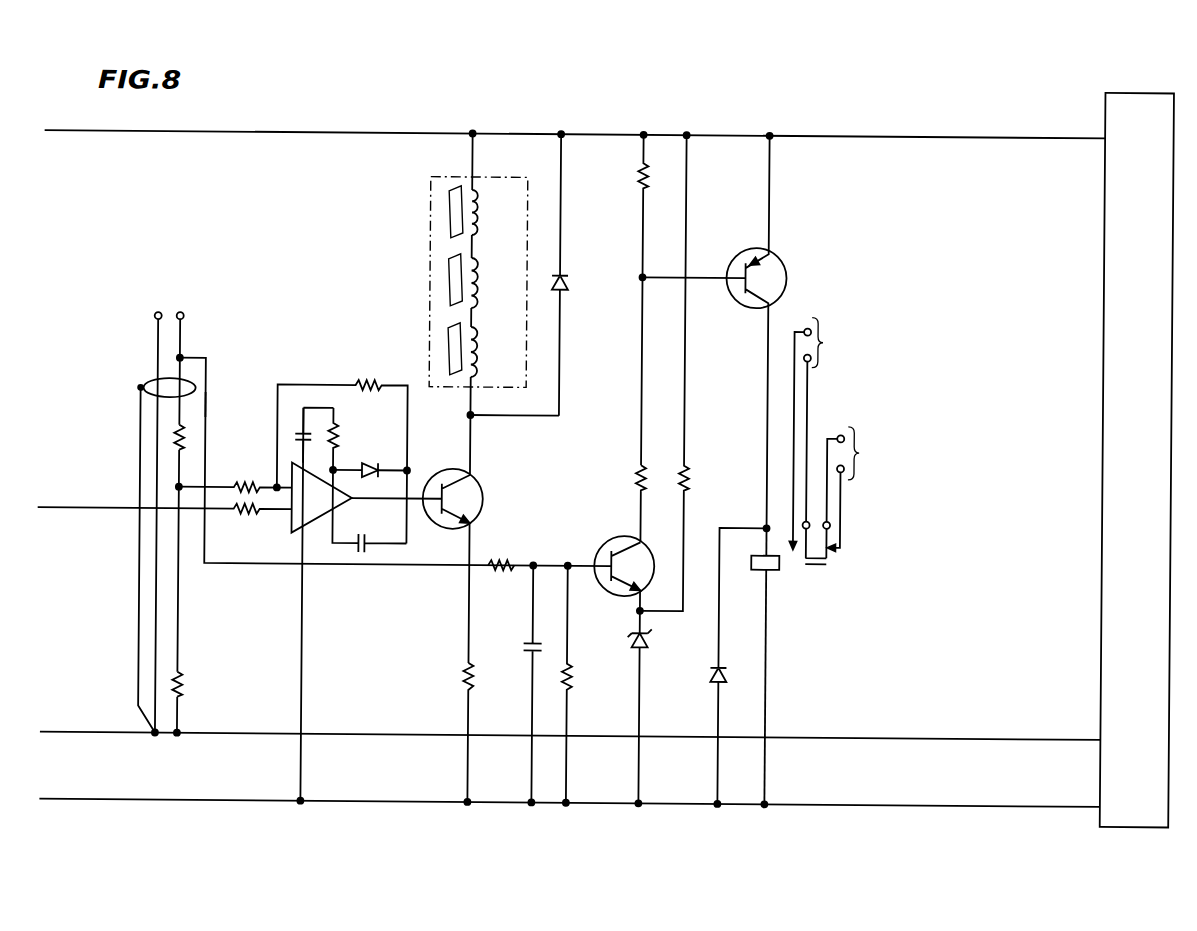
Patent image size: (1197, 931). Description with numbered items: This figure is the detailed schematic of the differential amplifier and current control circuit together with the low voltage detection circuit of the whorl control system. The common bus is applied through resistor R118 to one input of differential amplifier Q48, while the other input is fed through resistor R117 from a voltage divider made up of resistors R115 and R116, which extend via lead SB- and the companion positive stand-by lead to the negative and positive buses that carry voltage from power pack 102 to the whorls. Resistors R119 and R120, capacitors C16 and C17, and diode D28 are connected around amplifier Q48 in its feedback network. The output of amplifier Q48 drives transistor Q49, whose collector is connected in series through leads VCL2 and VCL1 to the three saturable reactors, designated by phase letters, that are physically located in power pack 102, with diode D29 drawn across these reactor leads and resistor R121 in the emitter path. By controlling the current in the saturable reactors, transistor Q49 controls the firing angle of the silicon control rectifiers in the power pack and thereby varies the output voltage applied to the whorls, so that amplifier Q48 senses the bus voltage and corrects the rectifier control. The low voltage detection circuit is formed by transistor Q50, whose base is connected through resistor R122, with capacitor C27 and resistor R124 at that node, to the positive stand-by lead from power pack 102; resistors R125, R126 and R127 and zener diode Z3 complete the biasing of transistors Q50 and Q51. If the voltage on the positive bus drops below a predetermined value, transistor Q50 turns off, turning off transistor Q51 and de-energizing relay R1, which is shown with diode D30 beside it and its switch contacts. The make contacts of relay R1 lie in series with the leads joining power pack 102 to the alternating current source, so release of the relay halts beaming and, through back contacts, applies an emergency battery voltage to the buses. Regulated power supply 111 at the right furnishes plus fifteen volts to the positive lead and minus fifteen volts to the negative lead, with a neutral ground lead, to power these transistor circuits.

The regulated power supply 111 is at (1102, 210).
The power pack 102 is at (172, 291).
The lead SB- is at (140, 412).
The resistor R115 is at (203, 684).
The resistor R116 is at (187, 446).
The resistor R117 is at (235, 477).
The resistor R118 is at (165, 508).
The resistor R119 is at (341, 451).
The resistor R120 is at (338, 440).
The resistor R121 is at (493, 734).
The resistor R122 is at (509, 555).
The resistor R124 is at (593, 686).
The resistor R125 is at (621, 298).
The resistor R126 is at (617, 503).
The resistor R127 is at (692, 373).
The capacitor C16 is at (297, 434).
The capacitor C17 is at (369, 511).
The capacitor C27 is at (514, 685).
The diode D28 is at (370, 459).
The diode D29 is at (581, 273).
The diode D30 is at (721, 666).
The zener diode Z3 is at (651, 717).
The differential amplifier Q48 is at (365, 606).
The transistor Q49 is at (452, 539).
The transistor Q50 is at (624, 577).
The transistor Q51 is at (714, 330).
The lead VCL1 is at (474, 157).
The lead VCL2 is at (472, 437).
The relay R1 is at (775, 570).